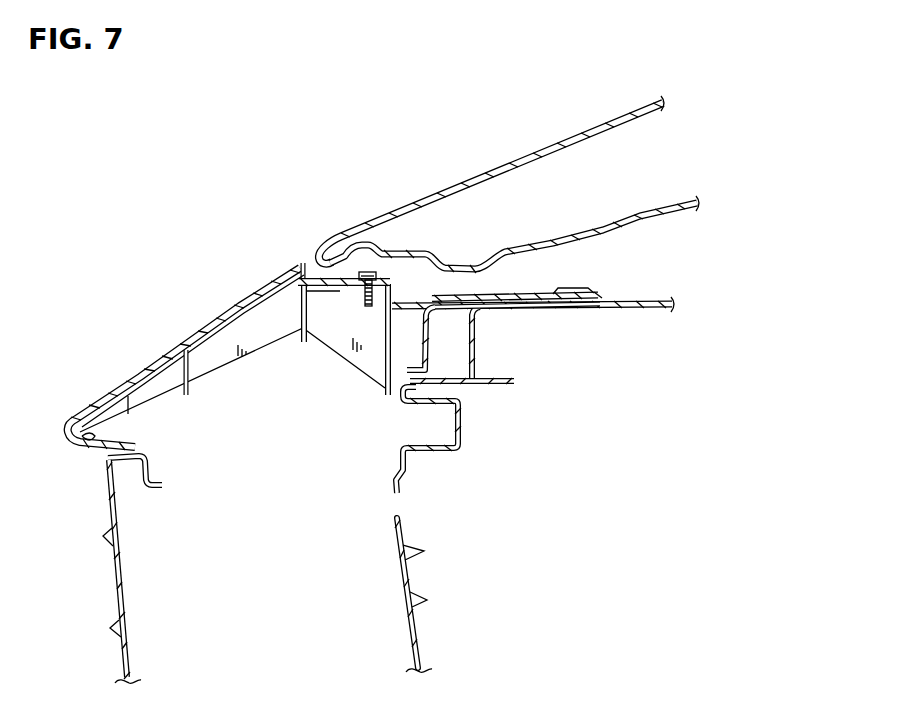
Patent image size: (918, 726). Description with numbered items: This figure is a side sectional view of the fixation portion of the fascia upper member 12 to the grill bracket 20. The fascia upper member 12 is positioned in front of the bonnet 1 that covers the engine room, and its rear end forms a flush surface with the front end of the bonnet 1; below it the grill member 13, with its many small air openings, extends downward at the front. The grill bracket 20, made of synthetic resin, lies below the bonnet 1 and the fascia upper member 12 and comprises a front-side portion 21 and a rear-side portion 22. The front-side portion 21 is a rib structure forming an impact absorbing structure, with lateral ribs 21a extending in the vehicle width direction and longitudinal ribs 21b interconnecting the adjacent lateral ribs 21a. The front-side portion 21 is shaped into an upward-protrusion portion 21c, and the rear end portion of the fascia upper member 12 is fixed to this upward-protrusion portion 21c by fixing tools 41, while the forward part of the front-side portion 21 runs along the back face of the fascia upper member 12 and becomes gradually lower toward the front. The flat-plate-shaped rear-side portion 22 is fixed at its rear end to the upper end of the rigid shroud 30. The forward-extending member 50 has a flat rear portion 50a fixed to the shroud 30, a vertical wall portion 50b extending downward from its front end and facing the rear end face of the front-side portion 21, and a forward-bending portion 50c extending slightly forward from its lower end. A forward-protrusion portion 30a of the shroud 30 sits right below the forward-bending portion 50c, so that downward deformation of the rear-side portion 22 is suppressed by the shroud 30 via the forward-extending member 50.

The bonnet 1 is at (545, 147).
The fascia upper member 12 is at (203, 320).
The grill member 13 is at (100, 545).
The grill bracket 20 is at (420, 298).
The rear-side portion 22 is at (517, 295).
The front-side portion 21 is at (232, 380).
The lateral ribs 21a is at (90, 440).
The longitudinal ribs 21b is at (128, 398).
The upward-protrusion portion 21c is at (307, 280).
The shroud 30 is at (625, 313).
The forward-protrusion portion 30a is at (415, 396).
The fixing tools 41 is at (366, 271).
The forward-extending member 50 is at (516, 414).
The rear portion 50a is at (455, 316).
The vertical wall portion 50b is at (443, 342).
The forward-bending portion 50c is at (440, 386).